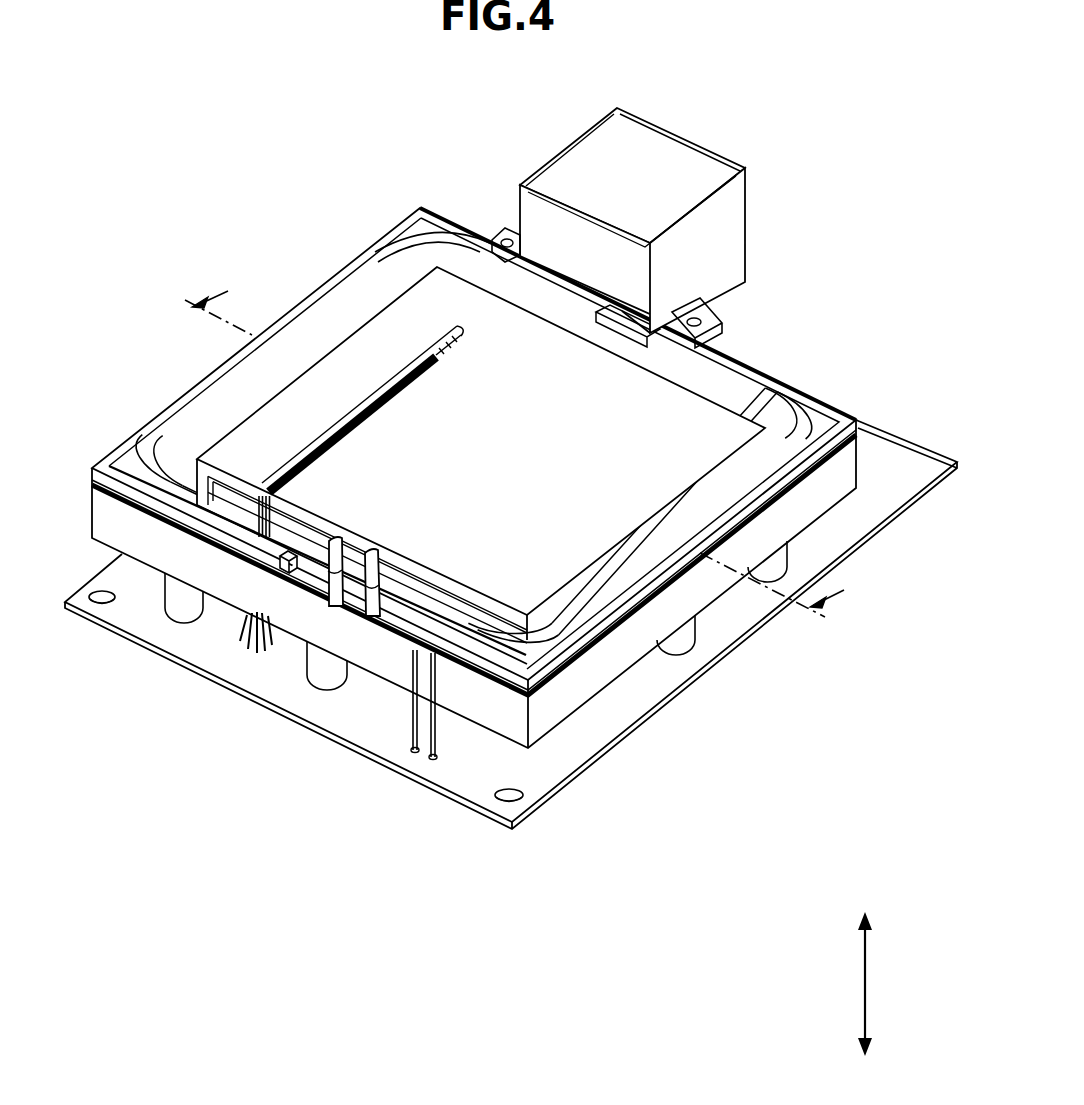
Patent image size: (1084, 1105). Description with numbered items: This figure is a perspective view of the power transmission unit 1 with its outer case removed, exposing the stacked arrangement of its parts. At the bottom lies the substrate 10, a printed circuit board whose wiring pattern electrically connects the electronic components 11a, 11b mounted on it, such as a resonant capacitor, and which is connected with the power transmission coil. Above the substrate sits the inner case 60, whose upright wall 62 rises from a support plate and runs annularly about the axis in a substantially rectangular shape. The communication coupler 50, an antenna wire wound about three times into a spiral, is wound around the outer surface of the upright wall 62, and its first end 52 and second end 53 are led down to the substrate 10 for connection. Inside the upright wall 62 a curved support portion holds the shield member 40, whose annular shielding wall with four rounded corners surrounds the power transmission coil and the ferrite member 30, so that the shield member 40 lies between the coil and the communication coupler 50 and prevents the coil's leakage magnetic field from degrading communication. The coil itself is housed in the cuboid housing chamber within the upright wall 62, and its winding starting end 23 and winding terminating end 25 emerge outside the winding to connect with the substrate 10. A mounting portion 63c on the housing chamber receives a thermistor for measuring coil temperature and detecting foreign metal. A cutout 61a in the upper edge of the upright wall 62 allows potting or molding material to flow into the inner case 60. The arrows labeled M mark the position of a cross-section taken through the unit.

The power transmission unit 1 is at (392, 150).
The substrate 10 is at (550, 768).
The circuit component box 11a is at (665, 148).
The flexible wiring board 11b is at (418, 358).
The winding starting end 23 is at (373, 588).
The winding terminating end 25 is at (330, 578).
The ferrite member 30 is at (233, 510).
The shield member 40 is at (742, 398).
The communication coupler 50 is at (602, 645).
The first end 52 is at (436, 760).
The second end 53 is at (410, 748).
The inner case 60 is at (487, 372).
The cutout 61a is at (628, 328).
The upright wall 62 is at (168, 408).
The mounting portion 63c is at (447, 337).
The section line M is at (523, 442).